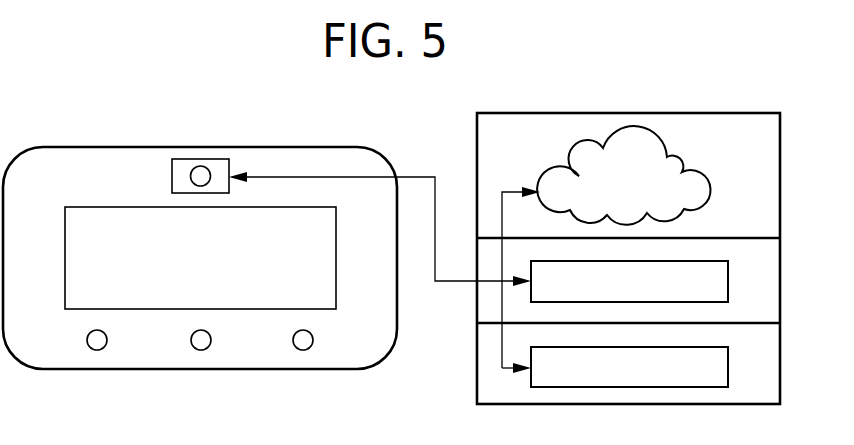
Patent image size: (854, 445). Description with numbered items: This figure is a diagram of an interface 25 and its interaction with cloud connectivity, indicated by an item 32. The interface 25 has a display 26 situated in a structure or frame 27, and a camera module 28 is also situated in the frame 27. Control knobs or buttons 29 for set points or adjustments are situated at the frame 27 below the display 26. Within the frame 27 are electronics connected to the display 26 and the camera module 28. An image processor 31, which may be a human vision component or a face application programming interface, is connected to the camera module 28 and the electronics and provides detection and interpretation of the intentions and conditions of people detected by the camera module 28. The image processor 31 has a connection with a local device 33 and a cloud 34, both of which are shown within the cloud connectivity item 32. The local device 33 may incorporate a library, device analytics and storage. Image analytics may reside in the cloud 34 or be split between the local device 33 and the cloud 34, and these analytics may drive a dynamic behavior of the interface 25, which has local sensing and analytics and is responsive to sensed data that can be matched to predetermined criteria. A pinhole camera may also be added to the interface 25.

The interface 25 is at (62, 134).
The display 26 is at (65, 258).
The frame 27 is at (398, 316).
The camera module 28 is at (172, 177).
The buttons 29 is at (87, 340).
The image processor 31 is at (729, 282).
The cloud connectivity 32 is at (477, 132).
The local device 33 is at (729, 369).
The cloud 34 is at (718, 188).